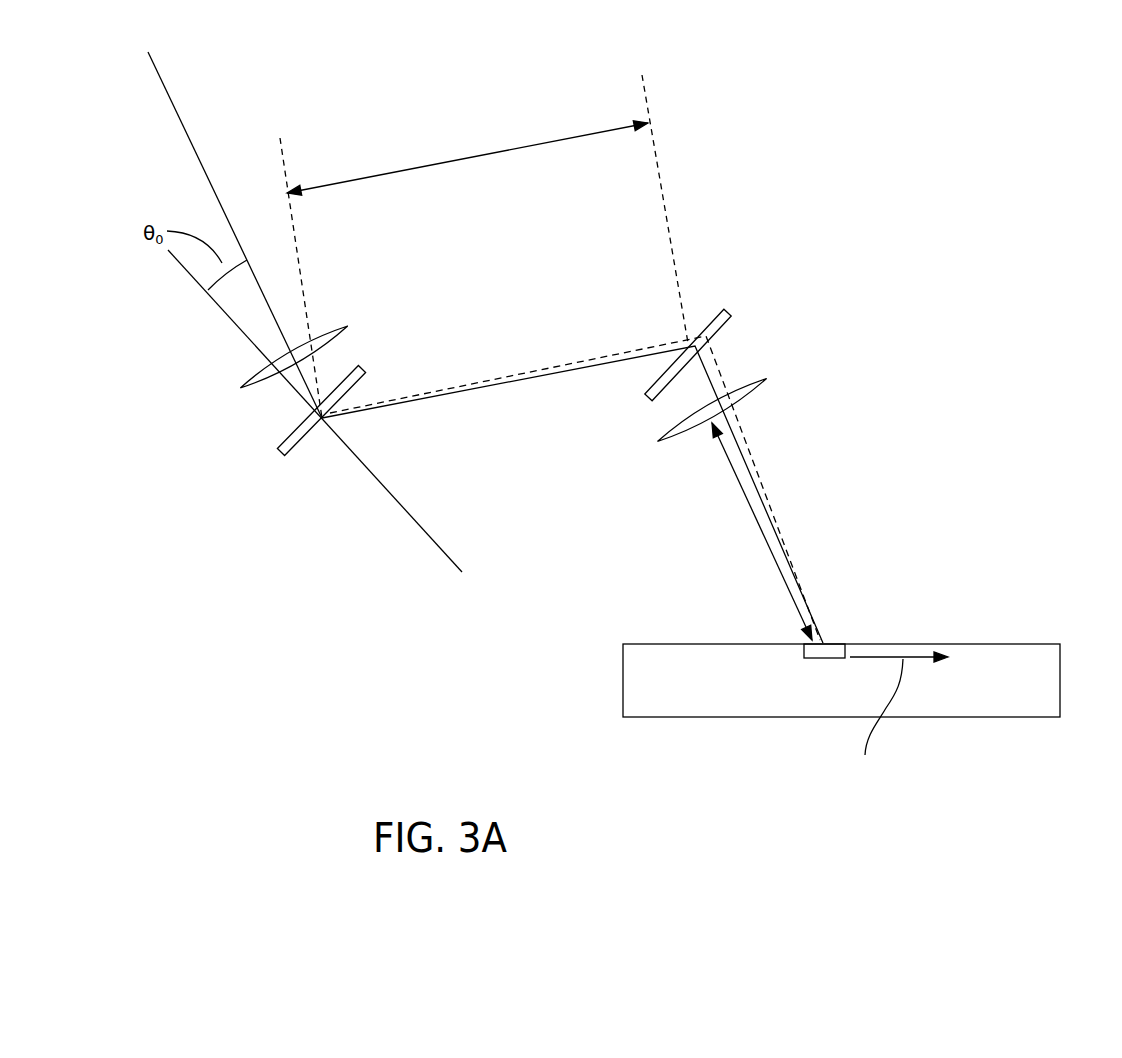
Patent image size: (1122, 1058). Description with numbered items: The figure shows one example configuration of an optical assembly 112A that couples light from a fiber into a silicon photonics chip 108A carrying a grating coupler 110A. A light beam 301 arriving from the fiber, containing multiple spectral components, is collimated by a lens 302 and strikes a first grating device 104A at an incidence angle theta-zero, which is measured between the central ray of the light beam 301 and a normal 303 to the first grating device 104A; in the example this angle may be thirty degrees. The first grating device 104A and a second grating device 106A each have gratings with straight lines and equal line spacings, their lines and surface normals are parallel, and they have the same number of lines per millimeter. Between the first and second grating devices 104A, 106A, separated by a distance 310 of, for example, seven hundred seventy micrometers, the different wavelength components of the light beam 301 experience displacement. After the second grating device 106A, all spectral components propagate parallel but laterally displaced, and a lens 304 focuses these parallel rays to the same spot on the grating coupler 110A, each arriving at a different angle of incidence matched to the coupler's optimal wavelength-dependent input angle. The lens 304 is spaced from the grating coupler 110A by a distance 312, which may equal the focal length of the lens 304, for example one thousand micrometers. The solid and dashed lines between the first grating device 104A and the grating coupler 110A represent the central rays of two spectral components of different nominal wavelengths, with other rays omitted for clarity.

The light beam 301 is at (183, 125).
The normal 303 is at (232, 328).
The lens 302 is at (348, 325).
The lens 304 is at (767, 378).
The first grating device 104A is at (287, 458).
The second grating device 106A is at (728, 312).
The silicon photonics chip 108A is at (687, 686).
The grating coupler 110A is at (830, 658).
The optical assembly 112A is at (752, 133).
The distance 310 is at (455, 157).
The distance 312 is at (757, 525).